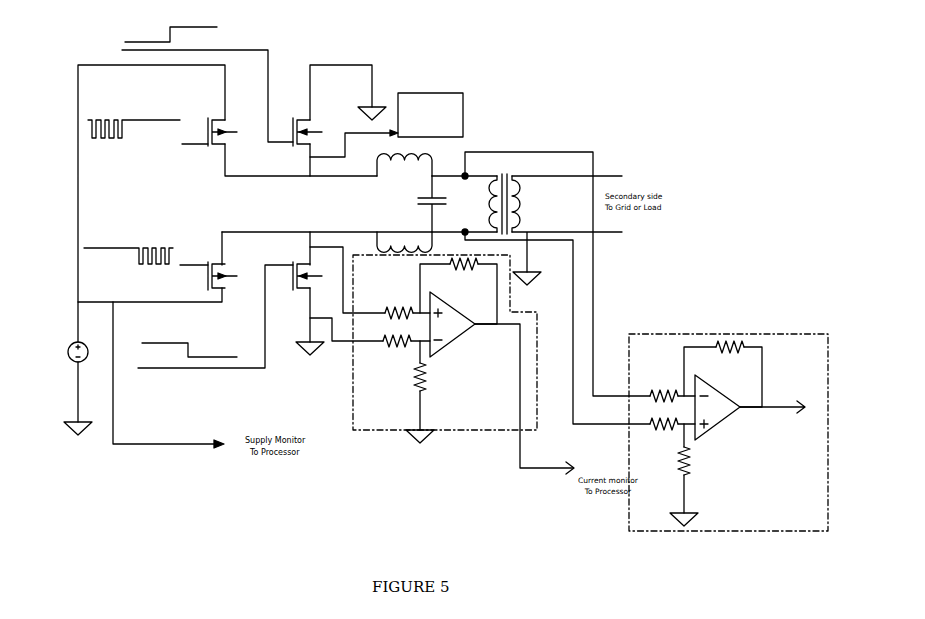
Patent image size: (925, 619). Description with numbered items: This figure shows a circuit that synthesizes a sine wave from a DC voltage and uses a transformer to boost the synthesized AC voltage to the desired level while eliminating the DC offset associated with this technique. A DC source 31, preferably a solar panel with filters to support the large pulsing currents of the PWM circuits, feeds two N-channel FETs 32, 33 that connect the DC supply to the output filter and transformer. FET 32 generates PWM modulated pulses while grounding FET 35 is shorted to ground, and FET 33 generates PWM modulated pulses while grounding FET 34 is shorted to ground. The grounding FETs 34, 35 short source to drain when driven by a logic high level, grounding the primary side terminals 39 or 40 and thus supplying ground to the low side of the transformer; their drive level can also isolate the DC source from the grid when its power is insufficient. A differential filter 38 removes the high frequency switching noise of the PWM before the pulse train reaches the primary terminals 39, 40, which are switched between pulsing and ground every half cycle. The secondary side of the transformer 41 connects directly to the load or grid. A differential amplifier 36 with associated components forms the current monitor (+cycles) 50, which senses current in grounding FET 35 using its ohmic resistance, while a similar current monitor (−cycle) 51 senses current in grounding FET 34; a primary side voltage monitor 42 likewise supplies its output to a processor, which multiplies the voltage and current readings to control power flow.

The DC source 31 is at (62, 338).
The FET 32 is at (216, 150).
The FET 33 is at (208, 255).
The grounding FET 34 is at (300, 115).
The grounding FET 35 is at (298, 255).
The differential amplifier 36 is at (455, 303).
The differential filter 38 is at (435, 155).
The primary side terminal 39 is at (470, 175).
The primary side terminal 40 is at (465, 229).
The secondary side of the transformer 41 is at (520, 201).
The primary transformer side voltage monitor 42 is at (745, 533).
The current monitor (+cycles) 50 is at (463, 370).
The current monitor (−cycle) 51 is at (420, 93).